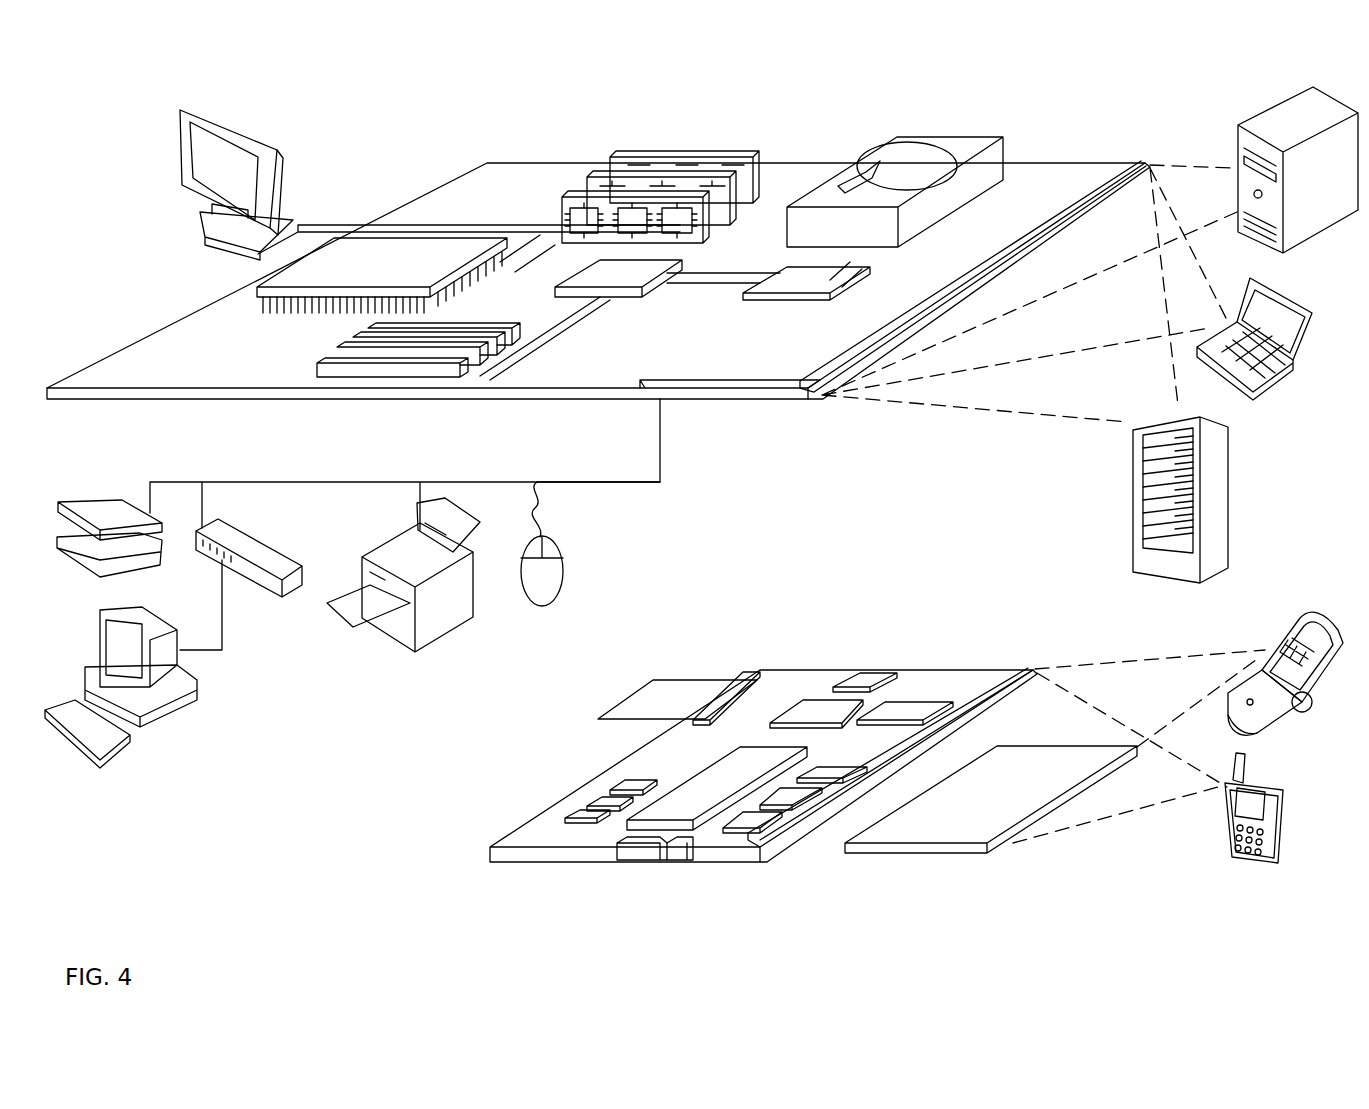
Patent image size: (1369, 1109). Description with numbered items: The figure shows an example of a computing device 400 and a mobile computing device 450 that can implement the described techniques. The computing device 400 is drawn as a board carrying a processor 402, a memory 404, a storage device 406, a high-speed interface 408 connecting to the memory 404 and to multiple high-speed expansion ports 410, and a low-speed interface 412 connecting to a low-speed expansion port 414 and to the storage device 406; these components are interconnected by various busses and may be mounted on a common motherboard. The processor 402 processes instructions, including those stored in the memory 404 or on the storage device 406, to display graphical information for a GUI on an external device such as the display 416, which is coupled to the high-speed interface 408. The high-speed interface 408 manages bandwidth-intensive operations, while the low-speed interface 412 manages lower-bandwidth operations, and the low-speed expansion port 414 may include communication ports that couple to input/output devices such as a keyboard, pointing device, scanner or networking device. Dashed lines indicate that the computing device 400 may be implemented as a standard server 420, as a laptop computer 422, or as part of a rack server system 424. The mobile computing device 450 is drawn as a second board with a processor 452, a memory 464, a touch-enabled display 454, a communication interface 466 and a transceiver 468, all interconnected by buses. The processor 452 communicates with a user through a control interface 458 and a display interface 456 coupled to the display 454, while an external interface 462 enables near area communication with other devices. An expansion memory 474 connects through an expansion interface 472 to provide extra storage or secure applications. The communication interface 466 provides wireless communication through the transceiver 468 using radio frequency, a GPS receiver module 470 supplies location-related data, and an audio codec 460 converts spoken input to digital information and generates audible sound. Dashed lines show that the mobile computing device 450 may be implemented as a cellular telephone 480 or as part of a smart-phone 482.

The computing device 400 is at (403, 116).
The processor 402 is at (270, 295).
The memory 404 is at (640, 153).
The storage device 406 is at (895, 140).
The high-speed interface 408 is at (590, 277).
The high-speed expansion ports 410 is at (337, 355).
The low-speed interface 412 is at (787, 280).
The low-speed expansion port 414 is at (697, 388).
The display 416 is at (187, 106).
The standard server 420 is at (1238, 148).
The laptop computer 422 is at (1302, 310).
The rack server system 424 is at (1133, 528).
The mobile computing device 450 is at (460, 860).
The processor 452 is at (683, 812).
The touch-enabled display 454 is at (947, 833).
The display interface 456 is at (767, 832).
The control interface 458 is at (805, 808).
The audio codec 460 is at (828, 773).
The external interface 462 is at (643, 850).
The memory 464 is at (590, 803).
The communication interface 466 is at (817, 707).
The transceiver 468 is at (907, 710).
The GPS receiver module 470 is at (870, 677).
The expansion interface 472 is at (743, 683).
The expansion memory 474 is at (653, 685).
The cellular telephone 480 is at (1285, 616).
The smart-phone 482 is at (1222, 820).